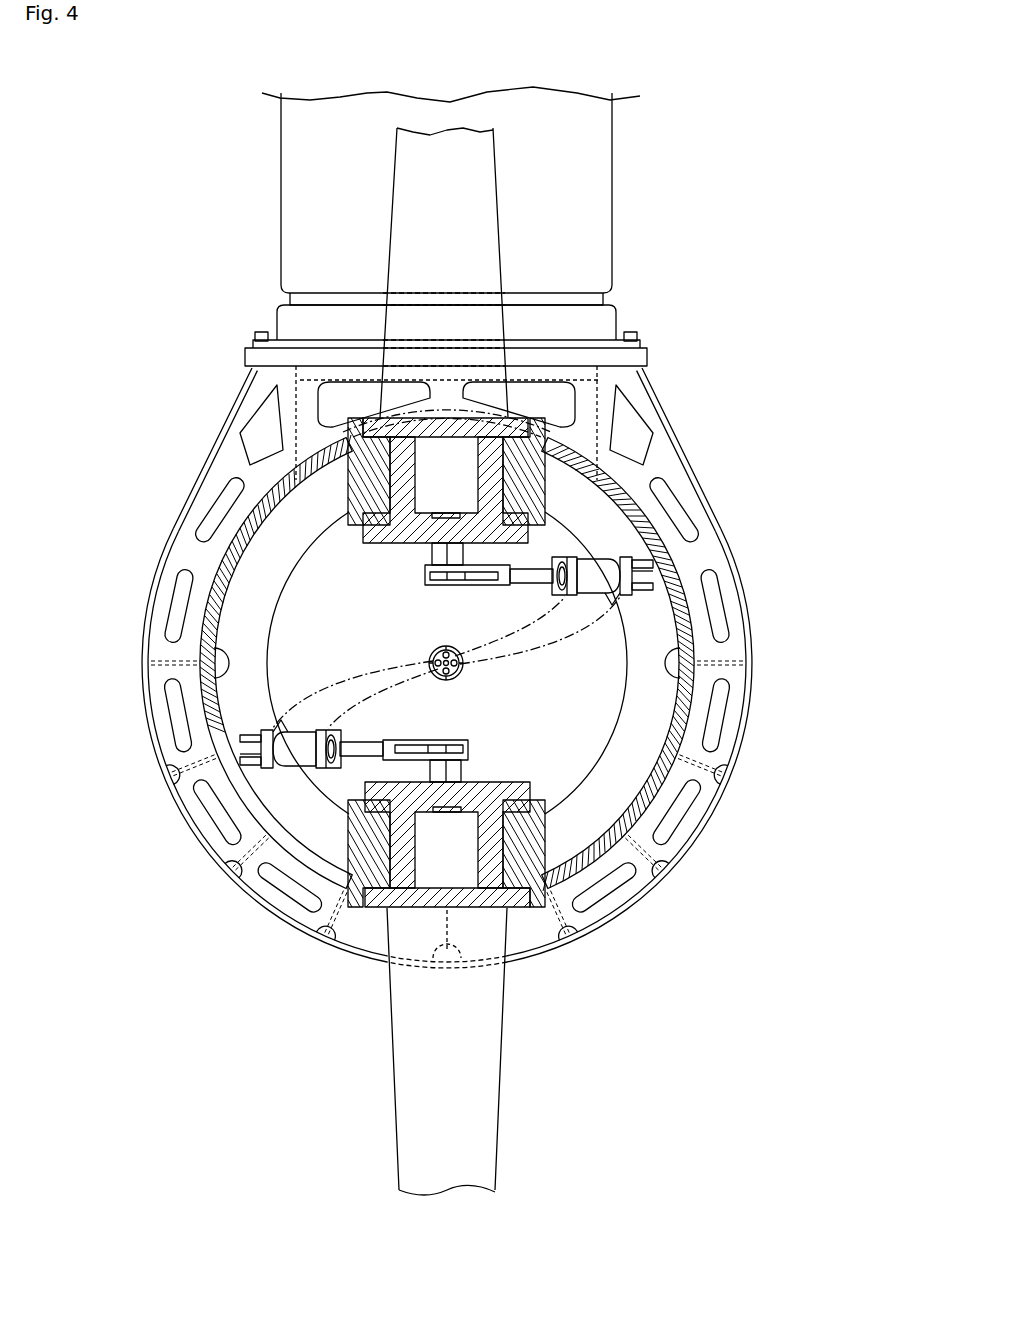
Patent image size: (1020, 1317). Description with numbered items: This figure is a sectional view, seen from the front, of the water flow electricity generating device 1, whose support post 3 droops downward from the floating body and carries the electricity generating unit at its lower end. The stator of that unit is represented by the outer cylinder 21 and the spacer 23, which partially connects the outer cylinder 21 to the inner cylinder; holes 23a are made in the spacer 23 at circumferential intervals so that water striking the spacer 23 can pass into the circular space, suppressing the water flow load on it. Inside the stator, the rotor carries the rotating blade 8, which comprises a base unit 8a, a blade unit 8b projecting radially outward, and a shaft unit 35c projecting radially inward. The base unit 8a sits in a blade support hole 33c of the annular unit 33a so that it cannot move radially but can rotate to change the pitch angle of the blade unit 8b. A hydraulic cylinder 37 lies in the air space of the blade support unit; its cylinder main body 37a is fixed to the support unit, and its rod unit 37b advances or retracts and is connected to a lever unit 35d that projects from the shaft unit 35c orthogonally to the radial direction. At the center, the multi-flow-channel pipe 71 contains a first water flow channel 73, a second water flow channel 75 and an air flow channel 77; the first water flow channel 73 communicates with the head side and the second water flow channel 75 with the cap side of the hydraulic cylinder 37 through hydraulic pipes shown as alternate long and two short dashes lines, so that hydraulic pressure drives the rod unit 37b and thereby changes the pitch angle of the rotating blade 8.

The water flow electricity generating device 1 is at (715, 262).
The support post 3 is at (612, 153).
The rotating blade 8 is at (392, 250).
The base unit 8a is at (400, 475).
The blade unit 8b is at (390, 198).
The outer cylinder 21 is at (752, 726).
The spacer 23 is at (700, 815).
The holes 23a is at (660, 828).
The annular unit 33a is at (247, 512).
The blade support hole 33c is at (503, 485).
The shaft unit 35c is at (432, 550).
The lever unit 35d is at (440, 575).
The hydraulic cylinder 37 is at (598, 556).
The cylinder main body 37a is at (608, 577).
The rod unit 37b is at (523, 587).
The multi-flow-channel pipe 71 is at (440, 648).
The first water flow channel 73 is at (445, 648).
The second water flow channel 75 is at (430, 658).
The air flow channel 77 is at (448, 678).